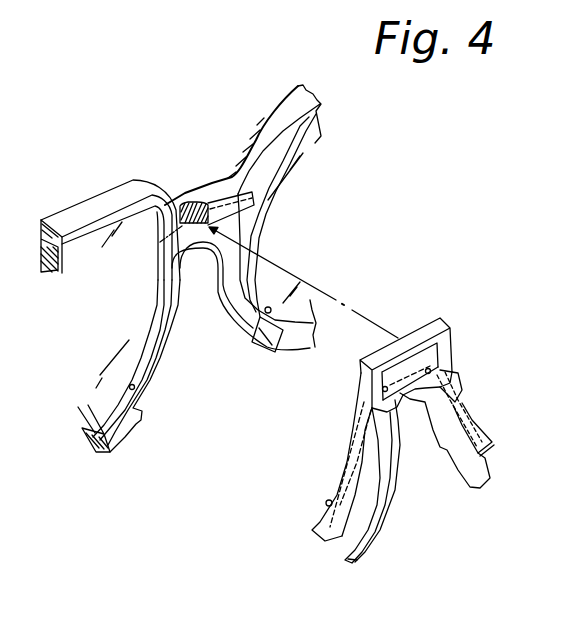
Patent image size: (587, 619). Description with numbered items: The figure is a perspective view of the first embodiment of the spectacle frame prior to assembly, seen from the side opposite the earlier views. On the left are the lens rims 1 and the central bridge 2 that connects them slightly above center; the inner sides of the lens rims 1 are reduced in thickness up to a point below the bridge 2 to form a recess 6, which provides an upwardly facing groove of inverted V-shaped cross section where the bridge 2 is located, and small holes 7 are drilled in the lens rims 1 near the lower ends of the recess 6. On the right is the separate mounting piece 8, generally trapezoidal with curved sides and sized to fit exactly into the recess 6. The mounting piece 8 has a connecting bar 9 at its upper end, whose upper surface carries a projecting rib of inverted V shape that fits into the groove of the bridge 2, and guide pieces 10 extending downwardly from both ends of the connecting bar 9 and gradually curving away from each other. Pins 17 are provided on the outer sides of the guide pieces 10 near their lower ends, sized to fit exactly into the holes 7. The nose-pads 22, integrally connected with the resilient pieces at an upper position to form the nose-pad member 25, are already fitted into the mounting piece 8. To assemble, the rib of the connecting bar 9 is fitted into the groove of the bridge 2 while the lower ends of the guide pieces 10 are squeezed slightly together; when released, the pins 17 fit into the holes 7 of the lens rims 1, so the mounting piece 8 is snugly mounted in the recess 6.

The lens rim 1 is at (133, 180).
The central bridge 2 is at (200, 185).
The recess 6 is at (236, 308).
The small hole 7 is at (252, 342).
The mounting piece 8 is at (451, 345).
The connecting bar 9 is at (418, 325).
The guide piece 10 is at (348, 449).
The pin 17 is at (327, 500).
The nose-pad 22 is at (484, 448).
The nose-pad member 25 is at (461, 388).